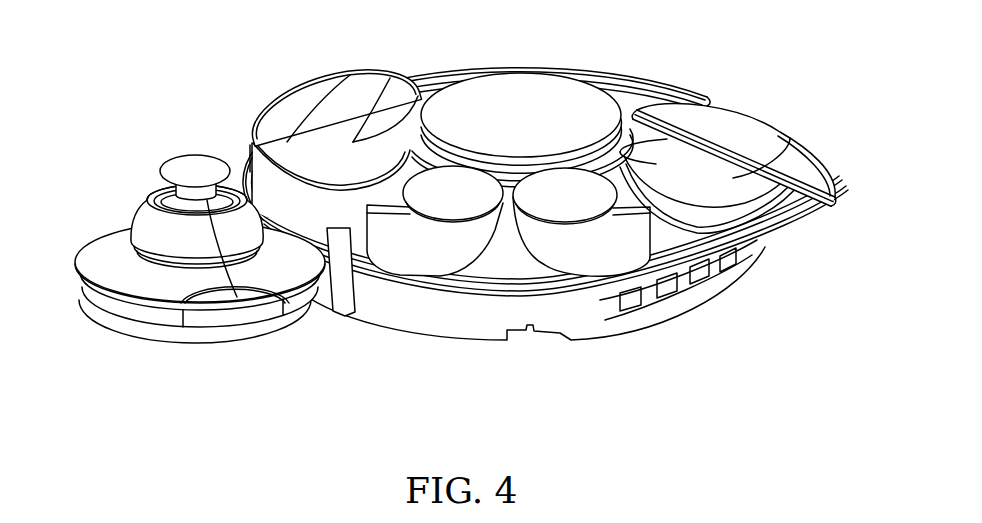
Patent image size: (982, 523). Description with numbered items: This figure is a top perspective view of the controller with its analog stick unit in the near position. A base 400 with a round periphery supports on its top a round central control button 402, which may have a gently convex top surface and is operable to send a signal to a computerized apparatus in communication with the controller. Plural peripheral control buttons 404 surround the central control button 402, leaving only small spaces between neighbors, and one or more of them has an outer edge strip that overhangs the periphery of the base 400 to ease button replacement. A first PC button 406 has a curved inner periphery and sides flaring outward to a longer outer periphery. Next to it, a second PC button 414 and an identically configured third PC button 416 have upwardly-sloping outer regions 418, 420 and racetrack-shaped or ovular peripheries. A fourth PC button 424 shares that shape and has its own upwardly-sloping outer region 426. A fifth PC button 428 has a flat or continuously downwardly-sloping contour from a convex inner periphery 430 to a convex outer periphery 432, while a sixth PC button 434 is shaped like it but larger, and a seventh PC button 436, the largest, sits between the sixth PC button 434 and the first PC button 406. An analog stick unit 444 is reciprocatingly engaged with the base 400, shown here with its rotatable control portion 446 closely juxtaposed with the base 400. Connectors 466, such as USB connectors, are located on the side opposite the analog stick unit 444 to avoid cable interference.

The base 400 is at (660, 317).
The central control button 402 is at (533, 93).
The peripheral control buttons 404 is at (523, 196).
The first PC button 406 is at (322, 100).
The second PC button 414 is at (307, 167).
The third PC button 416 is at (467, 203).
The upwardly-sloping outer region 418 is at (253, 140).
The upwardly-sloping outer region 420 is at (452, 279).
The fourth PC button 424 is at (543, 195).
The upwardly-sloping outer region 426 is at (607, 212).
The fifth PC button 428 is at (753, 163).
The convex inner periphery 430 is at (650, 143).
The convex outer periphery 432 is at (773, 215).
The sixth PC button 434 is at (730, 123).
The seventh PC button 436 is at (663, 85).
The analog stick unit 444 is at (179, 277).
The control portion 446 is at (103, 232).
The connectors 466 is at (703, 275).